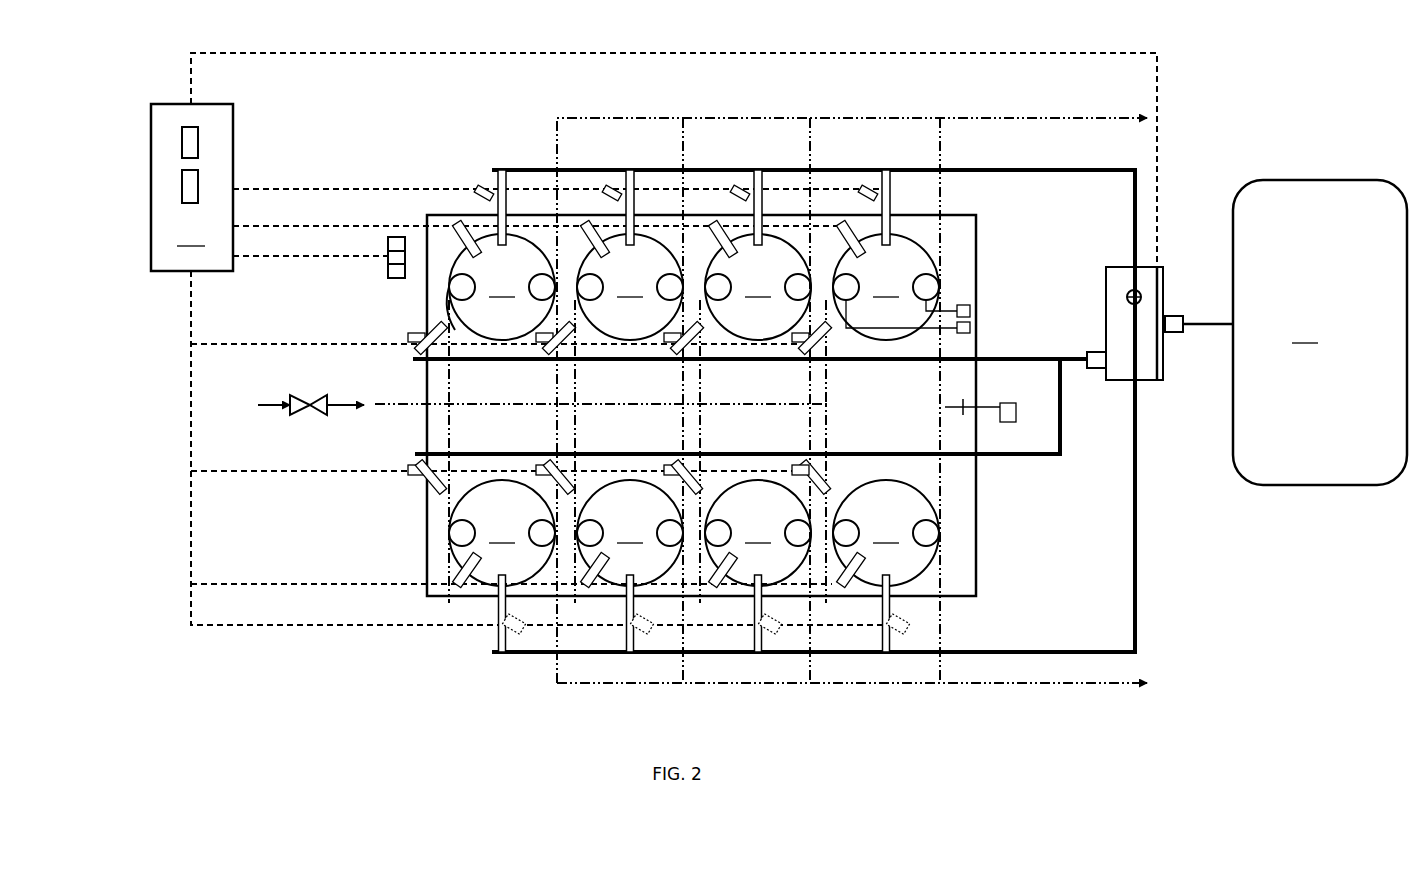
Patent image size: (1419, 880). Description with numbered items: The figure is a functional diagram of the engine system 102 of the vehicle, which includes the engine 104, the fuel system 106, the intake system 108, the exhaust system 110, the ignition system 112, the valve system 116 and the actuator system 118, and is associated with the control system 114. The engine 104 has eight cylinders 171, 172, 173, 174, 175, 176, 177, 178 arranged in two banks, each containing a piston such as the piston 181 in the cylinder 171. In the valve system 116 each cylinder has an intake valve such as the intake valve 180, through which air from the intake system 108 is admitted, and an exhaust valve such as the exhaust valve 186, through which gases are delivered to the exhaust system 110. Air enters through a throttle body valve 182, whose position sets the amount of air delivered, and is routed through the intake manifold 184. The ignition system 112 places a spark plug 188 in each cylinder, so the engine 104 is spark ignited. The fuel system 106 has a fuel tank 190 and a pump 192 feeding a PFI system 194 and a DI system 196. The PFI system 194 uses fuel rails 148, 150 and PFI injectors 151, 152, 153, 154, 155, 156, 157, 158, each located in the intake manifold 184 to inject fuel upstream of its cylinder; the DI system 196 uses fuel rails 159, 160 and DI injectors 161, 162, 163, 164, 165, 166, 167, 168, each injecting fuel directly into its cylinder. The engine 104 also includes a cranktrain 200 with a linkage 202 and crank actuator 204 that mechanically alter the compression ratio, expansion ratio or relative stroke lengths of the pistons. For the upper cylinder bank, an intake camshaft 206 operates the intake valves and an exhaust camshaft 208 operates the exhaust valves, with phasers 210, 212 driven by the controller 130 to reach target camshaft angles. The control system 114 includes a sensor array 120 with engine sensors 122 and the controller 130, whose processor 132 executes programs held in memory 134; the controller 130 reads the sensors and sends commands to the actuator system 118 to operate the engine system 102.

The engine system 102 is at (762, 42).
The engine 104 is at (978, 240).
The fuel system 106 is at (1320, 359).
The intake system 108 is at (297, 422).
The exhaust system 110 is at (1025, 108).
The ignition system 112 is at (367, 351).
The control system 114 is at (153, 164).
The valve system 116 is at (940, 535).
The actuator system 118 is at (1212, 388).
The sensor array 120 is at (312, 270).
The engine sensors 122 is at (388, 262).
The controller 130 is at (167, 187).
The processor 132 is at (182, 142).
The memory 134 is at (182, 185).
The fuel rail 148 is at (760, 361).
The fuel rail 150 is at (740, 454).
The PFI injector 151 is at (447, 342).
The PFI injector 152 is at (575, 342).
The PFI injector 153 is at (703, 348).
The PFI injector 154 is at (830, 346).
The PFI injector 155 is at (424, 472).
The PFI injector 156 is at (563, 466).
The PFI injector 157 is at (681, 466).
The PFI injector 158 is at (861, 445).
The fuel rail 159 is at (545, 168).
The fuel rail 160 is at (518, 656).
The DI injector 161 is at (506, 204).
The DI injector 162 is at (634, 204).
The DI injector 163 is at (762, 204).
The DI injector 164 is at (890, 170).
The DI injector 165 is at (494, 626).
The DI injector 166 is at (626, 624).
The DI injector 167 is at (754, 624).
The DI injector 168 is at (882, 624).
The cylinder 171 is at (463, 267).
The cylinder 172 is at (630, 287).
The cylinder 173 is at (758, 287).
The cylinder 174 is at (886, 287).
The cylinder 175 is at (502, 533).
The cylinder 176 is at (630, 533).
The cylinder 177 is at (758, 533).
The cylinder 178 is at (931, 533).
The intake valve 180 is at (450, 288).
The piston 181 is at (452, 283).
The throttle body valve 182 is at (327, 410).
The intake manifold 184 is at (522, 408).
The exhaust valve 186 is at (535, 291).
The spark plug 188 is at (462, 265).
The fuel tank 190 is at (1290, 492).
The pump 192 is at (1145, 360).
The PFI system 194 is at (912, 192).
The DI system 196 is at (842, 467).
The cranktrain 200 is at (1013, 401).
The linkage 202 is at (965, 404).
The crank actuator 204 is at (1008, 423).
The intake camshaft 206 is at (940, 333).
The exhaust camshaft 208 is at (942, 321).
The phaser 210 is at (942, 338).
The phaser 212 is at (972, 308).